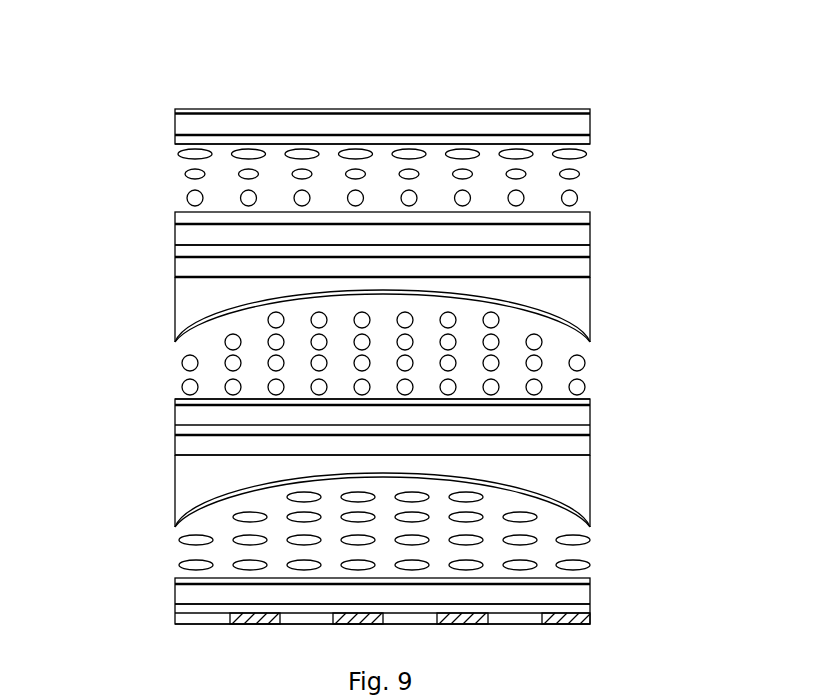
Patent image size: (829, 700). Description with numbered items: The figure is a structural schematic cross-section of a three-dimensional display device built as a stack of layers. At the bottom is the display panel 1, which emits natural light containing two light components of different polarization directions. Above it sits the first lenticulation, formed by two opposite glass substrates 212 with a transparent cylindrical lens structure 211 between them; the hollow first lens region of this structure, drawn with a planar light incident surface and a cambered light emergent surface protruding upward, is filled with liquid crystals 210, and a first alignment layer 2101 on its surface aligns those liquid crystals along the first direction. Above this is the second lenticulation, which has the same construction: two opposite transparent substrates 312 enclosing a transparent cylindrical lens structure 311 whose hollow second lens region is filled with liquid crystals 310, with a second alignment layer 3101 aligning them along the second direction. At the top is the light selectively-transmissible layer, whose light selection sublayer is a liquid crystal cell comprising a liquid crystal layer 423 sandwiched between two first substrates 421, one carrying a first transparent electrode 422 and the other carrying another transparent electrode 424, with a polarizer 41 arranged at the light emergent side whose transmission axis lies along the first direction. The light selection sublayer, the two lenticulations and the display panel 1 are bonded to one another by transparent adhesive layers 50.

The display panel 1 is at (592, 620).
The polarizer 41 is at (583, 105).
The first substrate 421 is at (592, 127).
The first transparent electrode 422 is at (590, 146).
The liquid crystal layer 423 is at (187, 178).
The transparent electrode 424 is at (592, 217).
The adhesive layer 50 is at (188, 250).
The cylindrical lens structure 311 is at (183, 308).
The second alignment layer 3101 is at (180, 328).
The transparent substrate 312 is at (590, 270).
The liquid crystals 310 is at (586, 359).
The cylindrical lens structure 211 is at (183, 480).
The first alignment layer 2101 is at (183, 510).
The glass substrate 212 is at (590, 450).
The liquid crystals 210 is at (560, 555).